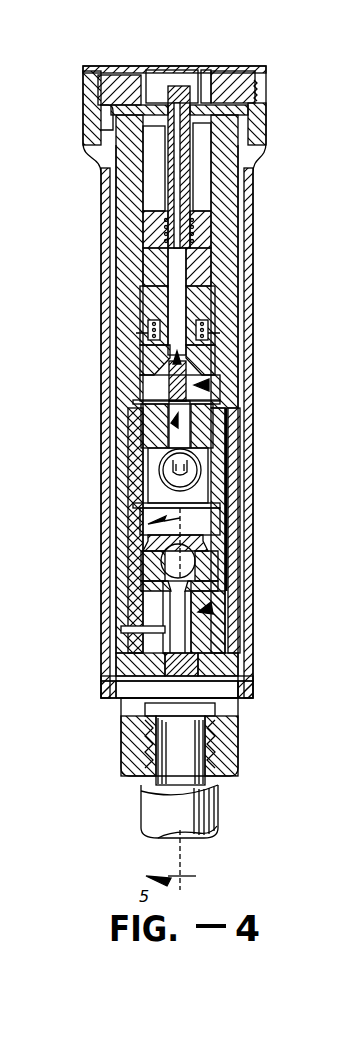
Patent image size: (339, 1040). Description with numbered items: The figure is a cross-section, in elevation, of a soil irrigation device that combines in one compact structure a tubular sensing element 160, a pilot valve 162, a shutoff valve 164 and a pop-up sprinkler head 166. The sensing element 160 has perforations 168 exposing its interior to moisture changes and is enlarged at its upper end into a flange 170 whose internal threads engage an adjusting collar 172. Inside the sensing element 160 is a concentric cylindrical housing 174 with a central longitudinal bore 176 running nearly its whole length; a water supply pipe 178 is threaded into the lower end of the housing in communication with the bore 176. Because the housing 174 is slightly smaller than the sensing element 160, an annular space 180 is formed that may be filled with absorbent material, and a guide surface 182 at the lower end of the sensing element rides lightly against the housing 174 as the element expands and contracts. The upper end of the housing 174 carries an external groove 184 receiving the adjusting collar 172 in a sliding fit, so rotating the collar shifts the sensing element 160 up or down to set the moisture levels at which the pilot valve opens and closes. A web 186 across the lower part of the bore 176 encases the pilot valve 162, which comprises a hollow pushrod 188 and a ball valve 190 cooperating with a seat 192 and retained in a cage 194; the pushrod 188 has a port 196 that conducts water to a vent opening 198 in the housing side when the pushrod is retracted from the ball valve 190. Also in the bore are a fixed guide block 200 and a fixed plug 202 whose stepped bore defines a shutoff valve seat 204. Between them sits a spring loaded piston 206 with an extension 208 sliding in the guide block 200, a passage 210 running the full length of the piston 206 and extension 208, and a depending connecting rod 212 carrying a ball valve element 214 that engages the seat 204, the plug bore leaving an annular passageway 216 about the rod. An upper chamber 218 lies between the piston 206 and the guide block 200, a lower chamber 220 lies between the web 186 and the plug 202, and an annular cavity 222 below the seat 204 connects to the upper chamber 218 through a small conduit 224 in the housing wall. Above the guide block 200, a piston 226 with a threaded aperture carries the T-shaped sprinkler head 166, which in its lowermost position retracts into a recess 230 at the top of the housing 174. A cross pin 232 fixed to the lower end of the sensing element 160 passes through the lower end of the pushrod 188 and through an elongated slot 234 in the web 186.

The tubular sensing element 160 is at (240, 256).
The pilot valve 162 is at (216, 598).
The shutoff valve 164 is at (204, 378).
The pop-up sprinkler head 166 is at (157, 62).
The perforations 168 is at (97, 180).
The flange 170 is at (252, 79).
The adjusting collar 172 is at (227, 65).
The cylindrical housing 174 is at (213, 225).
The central longitudinal bore 176 is at (188, 506).
The water supply pipe 178 is at (200, 796).
The annular space 180 is at (226, 430).
The guide surface 182 is at (231, 694).
The external groove 184 is at (113, 58).
The web 186 is at (193, 653).
The hollow pushrod 188 is at (200, 678).
The ball valve 190 is at (152, 551).
The seat 192 is at (158, 581).
The cage 194 is at (150, 528).
The port 196 is at (163, 600).
The vent opening 198 is at (125, 643).
The fixed guide block 200 is at (196, 289).
The fixed plug 202 is at (226, 408).
The shutoff valve seat 204 is at (150, 445).
The spring loaded piston 206 is at (212, 364).
The extension 208 is at (134, 293).
The passage 210 is at (140, 332).
The connecting rod 212 is at (140, 360).
The ball valve element 214 is at (150, 461).
The annular passageway 216 is at (140, 398).
The upper chamber 218 is at (206, 299).
The lower chamber 220 is at (212, 494).
The annular cavity 222 is at (206, 553).
The small conduit 224 is at (203, 530).
The piston 226 is at (196, 218).
The recess 230 is at (193, 66).
The cross pin 232 is at (225, 670).
The slot 234 is at (135, 700).